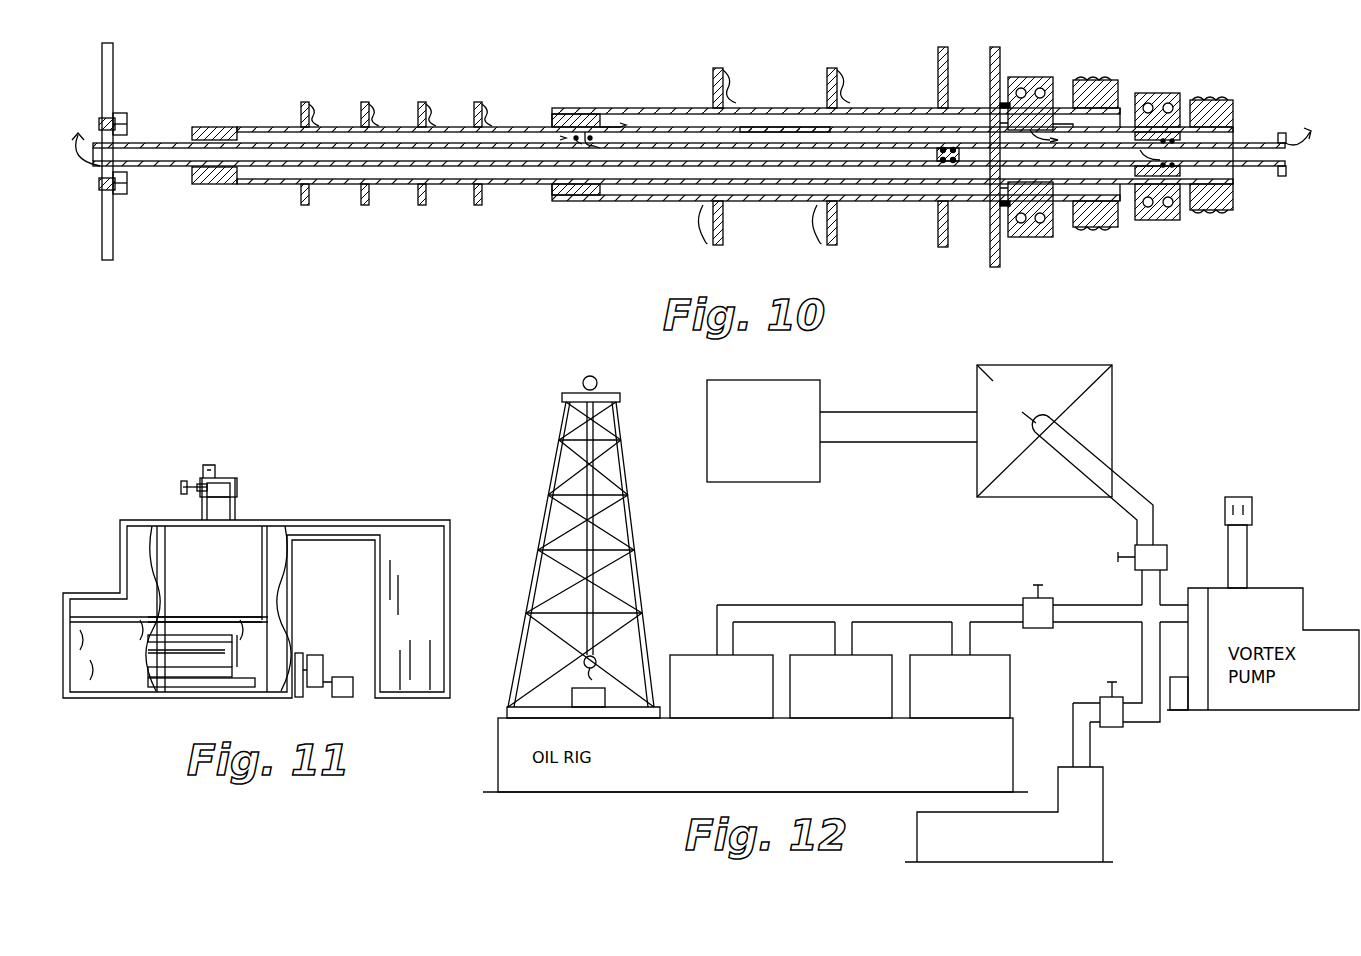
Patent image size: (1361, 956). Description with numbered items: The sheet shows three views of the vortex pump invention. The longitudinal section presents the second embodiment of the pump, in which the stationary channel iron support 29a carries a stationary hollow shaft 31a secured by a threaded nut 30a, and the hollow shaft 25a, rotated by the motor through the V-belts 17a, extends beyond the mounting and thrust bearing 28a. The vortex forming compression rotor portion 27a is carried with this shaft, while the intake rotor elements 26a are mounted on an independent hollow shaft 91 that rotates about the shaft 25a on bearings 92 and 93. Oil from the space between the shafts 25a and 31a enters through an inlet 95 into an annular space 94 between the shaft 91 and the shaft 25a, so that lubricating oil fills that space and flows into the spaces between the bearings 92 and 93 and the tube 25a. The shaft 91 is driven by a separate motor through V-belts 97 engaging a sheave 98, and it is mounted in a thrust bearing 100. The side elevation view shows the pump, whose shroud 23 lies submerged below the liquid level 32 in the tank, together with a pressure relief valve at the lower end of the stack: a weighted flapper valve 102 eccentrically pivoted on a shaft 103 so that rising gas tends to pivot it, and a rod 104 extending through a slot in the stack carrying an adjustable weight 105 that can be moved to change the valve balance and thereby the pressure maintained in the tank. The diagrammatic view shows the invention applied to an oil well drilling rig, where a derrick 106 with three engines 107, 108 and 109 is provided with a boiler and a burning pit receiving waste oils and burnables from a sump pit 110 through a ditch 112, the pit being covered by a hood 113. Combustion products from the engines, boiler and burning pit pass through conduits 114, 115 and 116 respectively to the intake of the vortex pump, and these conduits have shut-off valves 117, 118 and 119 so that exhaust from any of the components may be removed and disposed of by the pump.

In FIG. 10, the channel iron support 29a is at (113, 74).
In FIG. 10, the threaded nut 30a is at (121, 115).
In FIG. 10, the stationary hollow shaft 31a is at (143, 172).
In FIG. 10, the hollow shaft 25a is at (265, 186).
In FIG. 10, the vortex forming compression rotor portion 27a is at (365, 102).
In FIG. 10, the rotor elements 26a is at (832, 68).
In FIG. 10, the independent shaft 91 is at (640, 108).
In FIG. 10, the bearing 92 is at (556, 125).
In FIG. 10, the inlet 95 is at (585, 130).
In FIG. 10, the annular space 94 is at (780, 125).
In FIG. 10, the thrust bearing 100 is at (1013, 77).
In FIG. 10, the bearing 93 is at (1073, 93).
In FIG. 10, the V-belts 97 is at (1095, 228).
In FIG. 10, the sheave 98 is at (1125, 93).
In FIG. 10, the mounting and thrust bearing 28a is at (1175, 100).
In FIG. 10, the V-belts 17a is at (1210, 212).
In FIG. 11, the weighted flapper valve 102 is at (232, 520).
In FIG. 11, the shaft 103 is at (215, 478).
In FIG. 11, the rod 104 is at (200, 465).
In FIG. 11, the adjustable weight 105 is at (183, 487).
In FIG. 11, the liquid level 32 is at (245, 615).
In FIG. 11, the shroud 23 is at (200, 682).
In FIG. 12, the derrick 106 is at (640, 572).
In FIG. 12, the engine 107 is at (700, 655).
In FIG. 12, the engine 108 is at (818, 655).
In FIG. 12, the engine 109 is at (937, 655).
In FIG. 12, the sump pit 110 is at (820, 395).
In FIG. 12, the ditch 112 is at (945, 432).
In FIG. 12, the hood 113 is at (1105, 448).
In FIG. 12, the conduit 114 is at (943, 605).
In FIG. 12, the conduit 115 is at (1073, 745).
In FIG. 12, the conduit 116 is at (1135, 500).
In FIG. 12, the shut-off valve 117 is at (1028, 598).
In FIG. 12, the shut-off valve 118 is at (1100, 697).
In FIG. 12, the shut-off valve 119 is at (1165, 545).